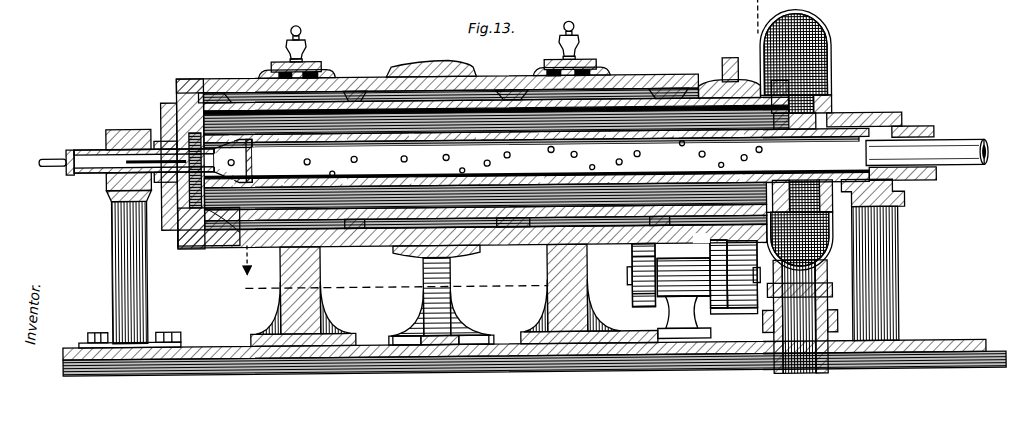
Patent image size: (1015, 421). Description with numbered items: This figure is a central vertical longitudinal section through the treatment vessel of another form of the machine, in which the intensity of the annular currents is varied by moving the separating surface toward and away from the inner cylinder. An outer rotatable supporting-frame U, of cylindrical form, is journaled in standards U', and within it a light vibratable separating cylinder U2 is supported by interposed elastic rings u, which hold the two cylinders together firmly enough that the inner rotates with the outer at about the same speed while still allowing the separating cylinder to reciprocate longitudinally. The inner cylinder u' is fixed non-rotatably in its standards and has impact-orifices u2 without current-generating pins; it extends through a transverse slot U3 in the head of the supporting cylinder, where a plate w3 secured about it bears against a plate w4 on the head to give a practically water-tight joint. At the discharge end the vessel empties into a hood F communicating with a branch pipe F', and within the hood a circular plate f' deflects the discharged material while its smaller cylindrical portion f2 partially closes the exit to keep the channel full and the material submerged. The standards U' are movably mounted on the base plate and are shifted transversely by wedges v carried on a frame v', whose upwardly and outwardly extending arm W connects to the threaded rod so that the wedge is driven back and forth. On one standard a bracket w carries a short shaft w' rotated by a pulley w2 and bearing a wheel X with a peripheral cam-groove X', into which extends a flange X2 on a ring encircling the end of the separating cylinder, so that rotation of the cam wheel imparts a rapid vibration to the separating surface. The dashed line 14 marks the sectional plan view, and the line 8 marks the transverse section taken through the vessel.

The clamping nut w3 is at (162, 100).
The lock nut w4 is at (172, 98).
The elastic rings u is at (444, 125).
The separating cylinder U2 is at (412, 100).
The supporting frame U is at (556, 144).
The hood F is at (740, 11).
The section line 8 is at (753, 22).
The branch pipe F' is at (806, 52).
The circular plate f' is at (807, 105).
The impact-orifices u2 is at (305, 160).
The inner cylinder u' is at (431, 157).
The cylindrical portion f2 is at (816, 156).
The transverse slot U3 is at (197, 231).
The section line 14 is at (383, 271).
The standards U' is at (454, 294).
The arm W is at (450, 285).
The wedges v is at (535, 342).
The frame v' is at (432, 328).
The short shaft w' is at (629, 276).
The pulley w2 is at (633, 299).
The bracket w is at (684, 291).
The cam-groove X' is at (712, 266).
The flange X2 is at (743, 246).
The wheel X is at (725, 283).